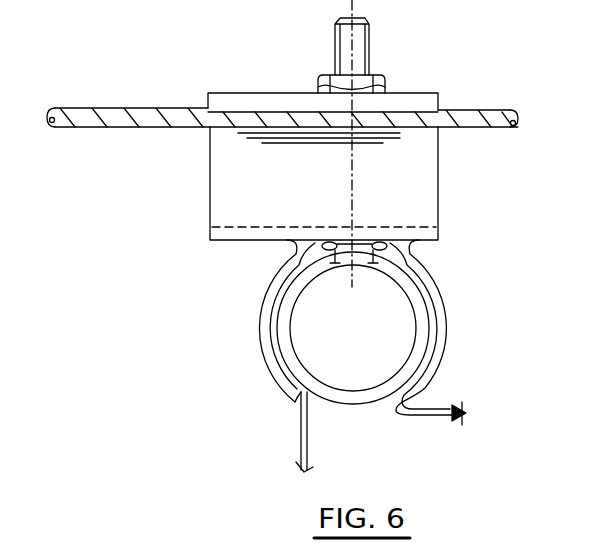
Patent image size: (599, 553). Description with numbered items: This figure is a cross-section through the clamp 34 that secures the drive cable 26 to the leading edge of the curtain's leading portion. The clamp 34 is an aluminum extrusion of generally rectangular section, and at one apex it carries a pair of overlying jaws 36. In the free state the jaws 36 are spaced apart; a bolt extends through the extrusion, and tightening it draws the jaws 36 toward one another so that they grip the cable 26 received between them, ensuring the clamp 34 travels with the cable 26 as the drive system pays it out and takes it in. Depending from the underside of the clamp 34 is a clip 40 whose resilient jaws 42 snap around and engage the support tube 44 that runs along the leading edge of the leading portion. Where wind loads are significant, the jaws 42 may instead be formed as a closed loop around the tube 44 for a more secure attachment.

The cable 26 is at (105, 118).
The clamp 34 is at (457, 203).
The overlying jaws 36 is at (239, 103).
The clip 40 is at (447, 292).
The resilient jaws 42 is at (270, 355).
The support tube 44 is at (355, 399).